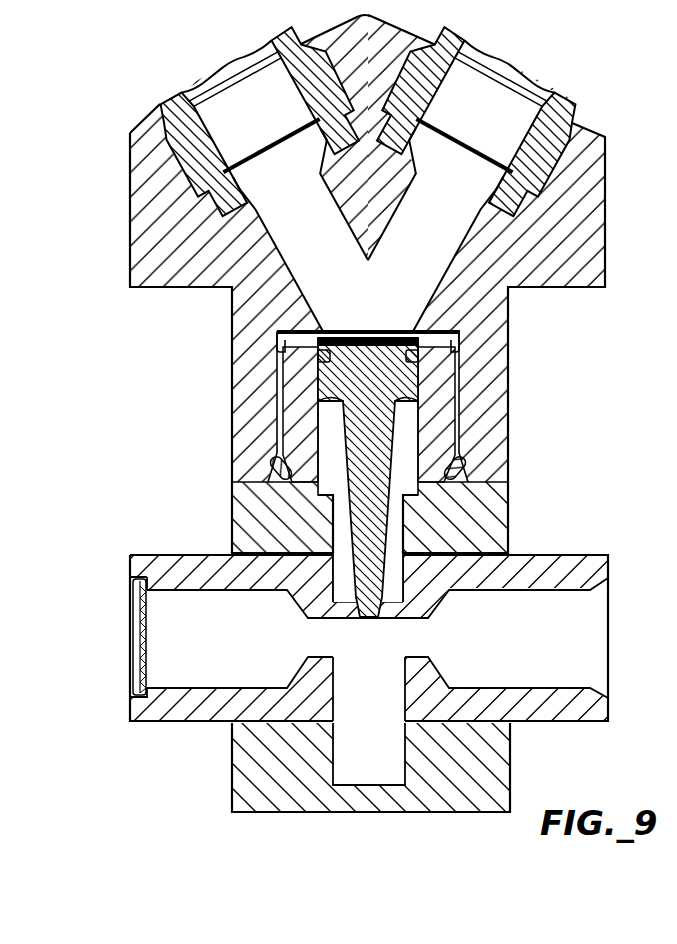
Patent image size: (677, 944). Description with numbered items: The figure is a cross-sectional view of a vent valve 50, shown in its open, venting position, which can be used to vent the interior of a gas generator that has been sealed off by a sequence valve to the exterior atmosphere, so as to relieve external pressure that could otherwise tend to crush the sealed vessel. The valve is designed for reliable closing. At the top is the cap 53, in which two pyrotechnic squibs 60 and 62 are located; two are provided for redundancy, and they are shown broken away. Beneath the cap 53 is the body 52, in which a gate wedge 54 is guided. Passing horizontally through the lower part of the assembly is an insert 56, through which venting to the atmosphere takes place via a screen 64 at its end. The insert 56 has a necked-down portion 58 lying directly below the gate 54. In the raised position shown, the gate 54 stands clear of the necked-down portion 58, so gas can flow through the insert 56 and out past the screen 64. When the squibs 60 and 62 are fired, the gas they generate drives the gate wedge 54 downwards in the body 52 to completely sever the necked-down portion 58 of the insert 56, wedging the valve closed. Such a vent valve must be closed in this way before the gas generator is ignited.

The vent valve 50 is at (338, 472).
The body 52 is at (509, 533).
The cap 53 is at (607, 167).
The gate wedge 54 is at (402, 447).
The insert 56 is at (587, 555).
The necked-down portion 58 is at (368, 690).
The pyrotechnic squib 60 is at (227, 100).
The pyrotechnic squib 62 is at (508, 100).
The screen 64 is at (136, 640).